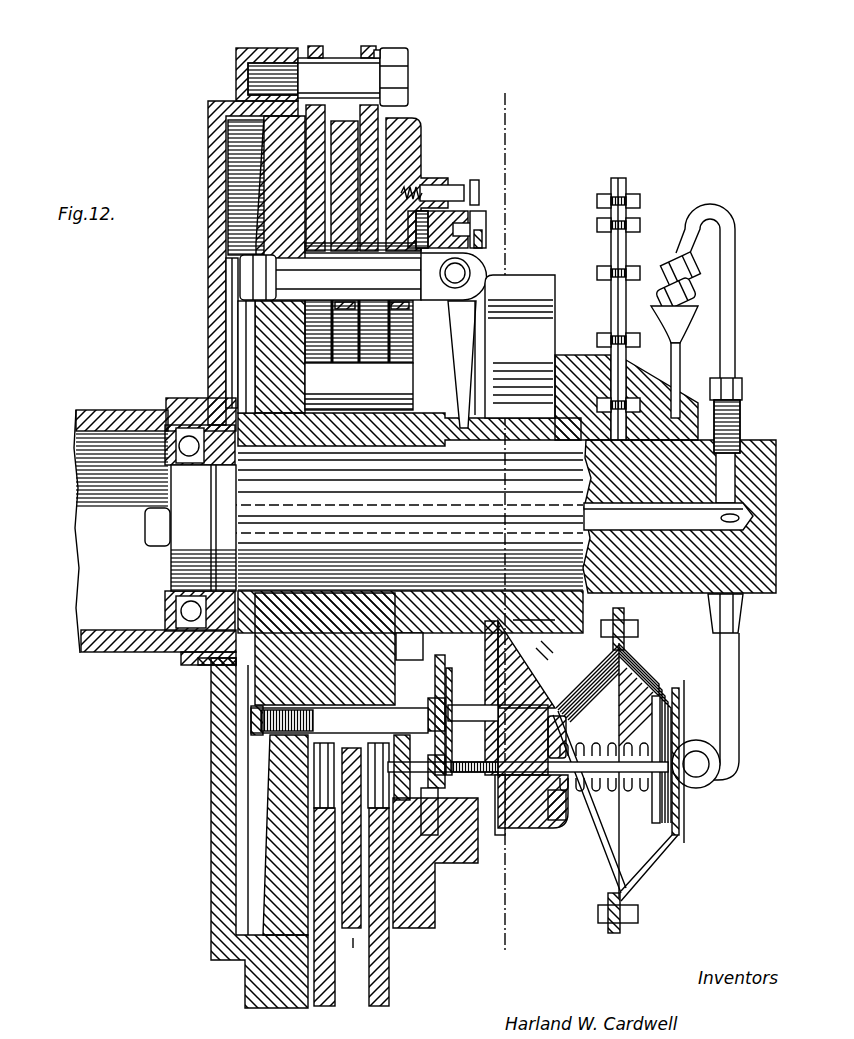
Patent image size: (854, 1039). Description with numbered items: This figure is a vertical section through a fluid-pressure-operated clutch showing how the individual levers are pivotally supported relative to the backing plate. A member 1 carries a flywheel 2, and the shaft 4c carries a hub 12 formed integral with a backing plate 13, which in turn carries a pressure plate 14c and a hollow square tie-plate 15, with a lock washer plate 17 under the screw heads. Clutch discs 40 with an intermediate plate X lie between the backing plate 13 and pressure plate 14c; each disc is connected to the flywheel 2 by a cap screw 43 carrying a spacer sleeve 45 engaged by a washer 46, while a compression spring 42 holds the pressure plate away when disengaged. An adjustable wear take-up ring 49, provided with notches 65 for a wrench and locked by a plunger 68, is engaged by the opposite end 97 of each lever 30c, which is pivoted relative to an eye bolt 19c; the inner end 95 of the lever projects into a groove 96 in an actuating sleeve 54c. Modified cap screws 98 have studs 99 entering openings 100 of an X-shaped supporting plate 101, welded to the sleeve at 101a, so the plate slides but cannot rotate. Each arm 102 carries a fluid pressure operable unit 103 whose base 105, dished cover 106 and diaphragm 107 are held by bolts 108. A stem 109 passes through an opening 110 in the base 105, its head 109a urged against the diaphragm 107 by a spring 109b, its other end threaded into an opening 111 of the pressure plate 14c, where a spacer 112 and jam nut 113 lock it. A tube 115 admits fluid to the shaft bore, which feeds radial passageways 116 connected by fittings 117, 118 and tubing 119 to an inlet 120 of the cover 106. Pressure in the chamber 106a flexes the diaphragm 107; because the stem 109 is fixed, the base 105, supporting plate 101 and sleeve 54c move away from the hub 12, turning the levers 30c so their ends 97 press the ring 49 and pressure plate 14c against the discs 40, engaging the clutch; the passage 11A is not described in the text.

The member 1 is at (105, 402).
The flywheel 2 is at (203, 98).
The shaft 4c is at (667, 590).
The passage 11A is at (648, 498).
The hub 12 is at (409, 646).
The backing plate 13 is at (225, 155).
The pressure plate 14c is at (413, 133).
The tie-plate 15 is at (430, 660).
The lock washer plate 17 is at (434, 682).
The eye bolt 19c is at (232, 265).
The lever 30c is at (478, 268).
The clutch disc 40 is at (306, 38).
The compression spring 42 is at (345, 254).
The cap screw 43 is at (392, 52).
The spacer sleeve 45 is at (335, 50).
The washer 46 is at (372, 46).
The wear take-up ring 49 is at (462, 212).
The actuating sleeve 54c is at (505, 614).
The notches 65 is at (470, 202).
The plunger 68 is at (468, 175).
The inner end 95 is at (452, 426).
The groove 96 is at (462, 426).
The opposite end 97 is at (480, 222).
The modified cap screw 98 is at (243, 706).
The stud 99 is at (450, 695).
The opening 100 is at (505, 700).
The supporting plate 101 is at (485, 286).
The weld 101a is at (508, 398).
The arm 102 is at (485, 322).
The fluid pressure operable unit 103 is at (600, 270).
The base 105 is at (548, 345).
The dished cover 106 is at (620, 225).
The chamber 106a is at (666, 848).
The diaphragm 107 is at (672, 830).
The bolts 108 is at (598, 205).
The stem 109 is at (594, 806).
The head 109a is at (648, 802).
The spring 109b is at (590, 782).
The opening 110 is at (558, 735).
The opening 111 is at (418, 783).
The spacer 112 is at (432, 755).
The jam nut 113 is at (420, 862).
The tube 115 is at (150, 538).
The radial passageway 116 is at (715, 510).
The fitting 117 is at (748, 380).
The fitting 118 is at (668, 248).
The tubing 119 is at (728, 300).
The inlet 120 is at (680, 306).
The intermediate plate X is at (346, 953).